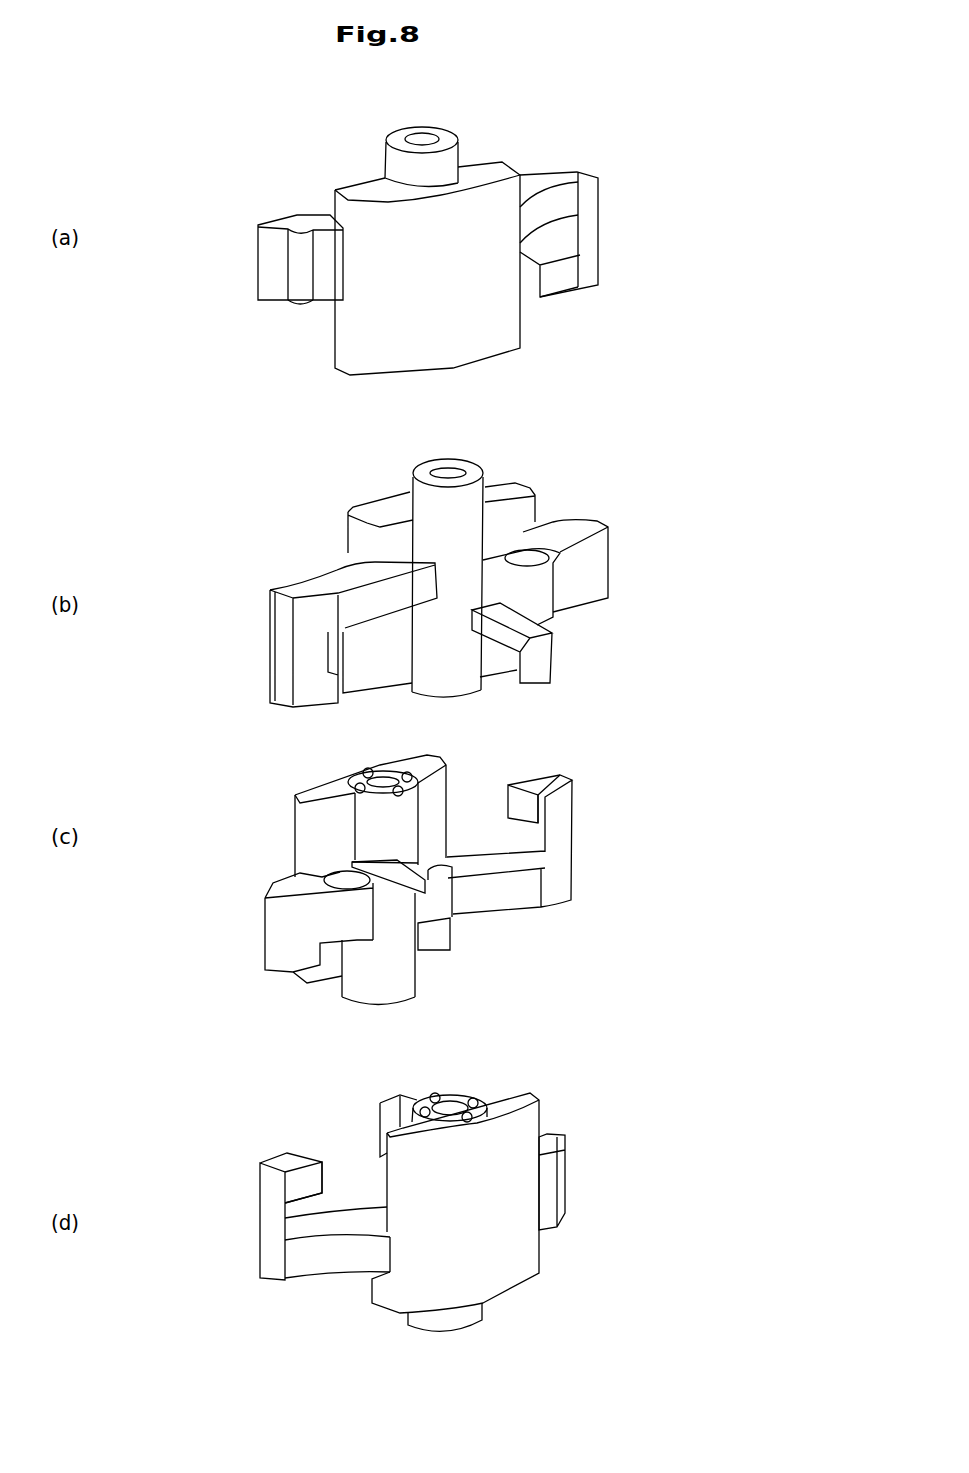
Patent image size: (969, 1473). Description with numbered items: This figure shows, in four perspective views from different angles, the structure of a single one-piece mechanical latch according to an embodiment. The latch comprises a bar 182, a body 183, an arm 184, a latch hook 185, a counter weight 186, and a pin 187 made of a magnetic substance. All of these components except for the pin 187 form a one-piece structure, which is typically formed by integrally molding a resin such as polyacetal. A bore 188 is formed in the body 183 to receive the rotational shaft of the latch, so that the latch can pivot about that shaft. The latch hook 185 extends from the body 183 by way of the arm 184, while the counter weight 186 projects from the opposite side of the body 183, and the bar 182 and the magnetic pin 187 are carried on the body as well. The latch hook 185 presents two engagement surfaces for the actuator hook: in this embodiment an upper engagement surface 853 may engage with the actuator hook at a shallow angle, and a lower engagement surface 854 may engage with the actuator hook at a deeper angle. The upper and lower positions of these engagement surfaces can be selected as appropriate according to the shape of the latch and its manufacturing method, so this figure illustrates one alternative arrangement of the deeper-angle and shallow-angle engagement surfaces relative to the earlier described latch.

The bar 182 is at (542, 663).
The body 183 is at (490, 170).
The arm 184 is at (550, 180).
The latch hook 185 is at (600, 192).
The counter weight 186 is at (307, 227).
The pin 187 is at (530, 555).
The bore 188 is at (421, 138).
The upper engagement surface 853 is at (565, 237).
The lower engagement surface 854 is at (528, 283).